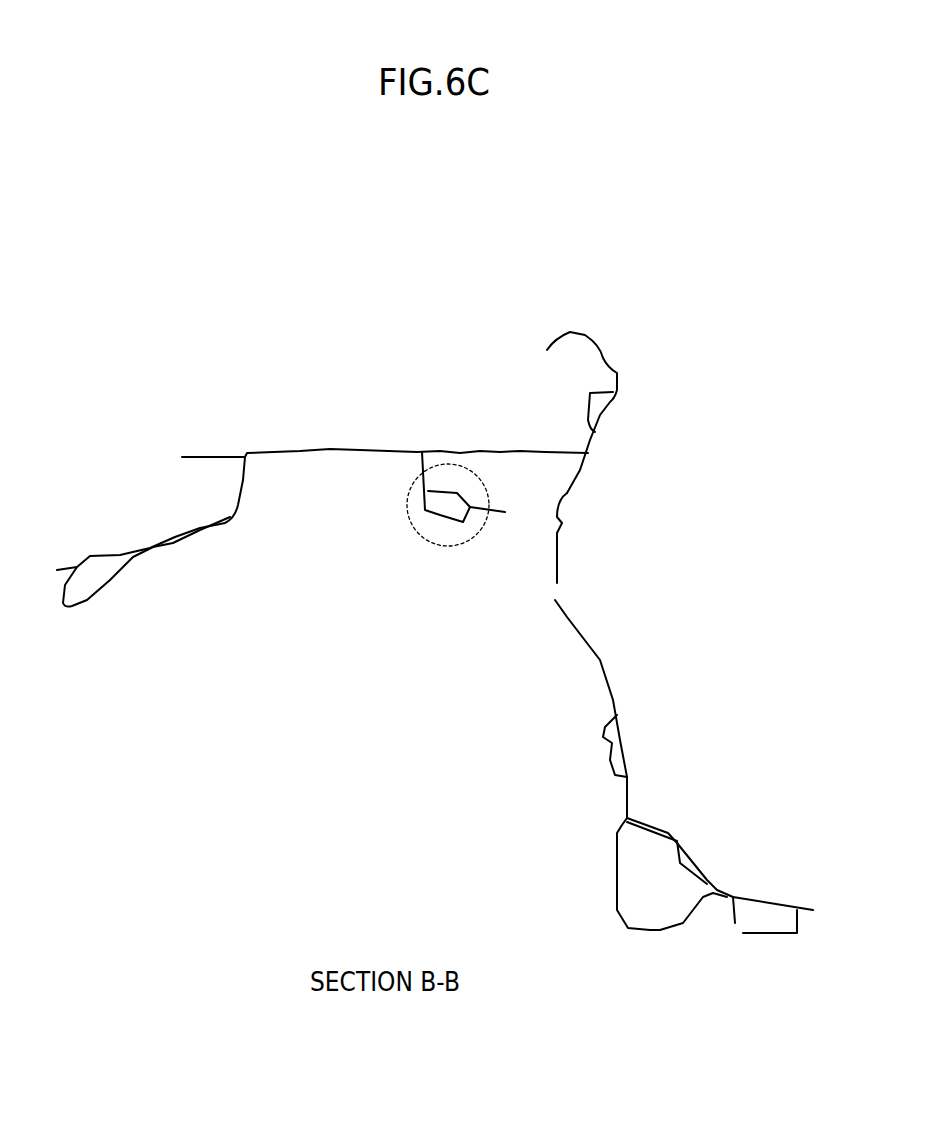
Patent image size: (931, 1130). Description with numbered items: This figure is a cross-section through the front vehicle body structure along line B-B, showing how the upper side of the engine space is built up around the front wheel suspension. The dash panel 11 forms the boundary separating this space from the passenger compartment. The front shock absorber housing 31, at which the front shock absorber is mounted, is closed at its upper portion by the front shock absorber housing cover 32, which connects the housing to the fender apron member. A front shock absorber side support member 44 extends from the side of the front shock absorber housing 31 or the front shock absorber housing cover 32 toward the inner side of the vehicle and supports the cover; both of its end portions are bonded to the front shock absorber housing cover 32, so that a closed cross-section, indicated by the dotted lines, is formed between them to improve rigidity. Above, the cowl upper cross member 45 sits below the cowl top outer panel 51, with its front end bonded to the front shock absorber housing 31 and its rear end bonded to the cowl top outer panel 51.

The dash panel 11 is at (567, 497).
The front shock absorber housing 31 is at (237, 510).
The front shock absorber housing cover 32 is at (330, 447).
The front shock absorber side support member 44 is at (440, 515).
The cowl upper cross member 45 is at (587, 398).
The cowl top outer panel 51 is at (583, 335).